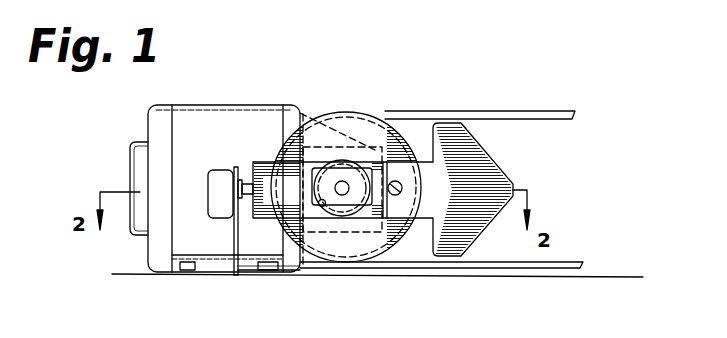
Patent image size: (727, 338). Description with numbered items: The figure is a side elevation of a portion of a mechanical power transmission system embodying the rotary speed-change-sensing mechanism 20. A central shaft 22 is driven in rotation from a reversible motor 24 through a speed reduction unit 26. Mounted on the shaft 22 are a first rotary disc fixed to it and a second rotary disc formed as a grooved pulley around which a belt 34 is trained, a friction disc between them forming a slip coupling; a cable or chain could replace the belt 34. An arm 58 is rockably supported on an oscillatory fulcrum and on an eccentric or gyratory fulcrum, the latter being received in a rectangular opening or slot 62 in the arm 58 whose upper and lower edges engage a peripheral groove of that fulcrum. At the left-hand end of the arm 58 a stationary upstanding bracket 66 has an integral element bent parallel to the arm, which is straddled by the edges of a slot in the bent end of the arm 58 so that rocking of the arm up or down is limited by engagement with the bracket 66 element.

The rotary speed-change mechanism 20 is at (410, 131).
The central shaft 22 is at (343, 194).
The reversible motor 24 is at (236, 98).
The speed reduction unit 26 is at (369, 136).
The belt 34 is at (517, 112).
The arm 58 is at (426, 249).
The rectangular opening or slot 62 is at (324, 206).
The upstanding bracket 66 is at (238, 273).